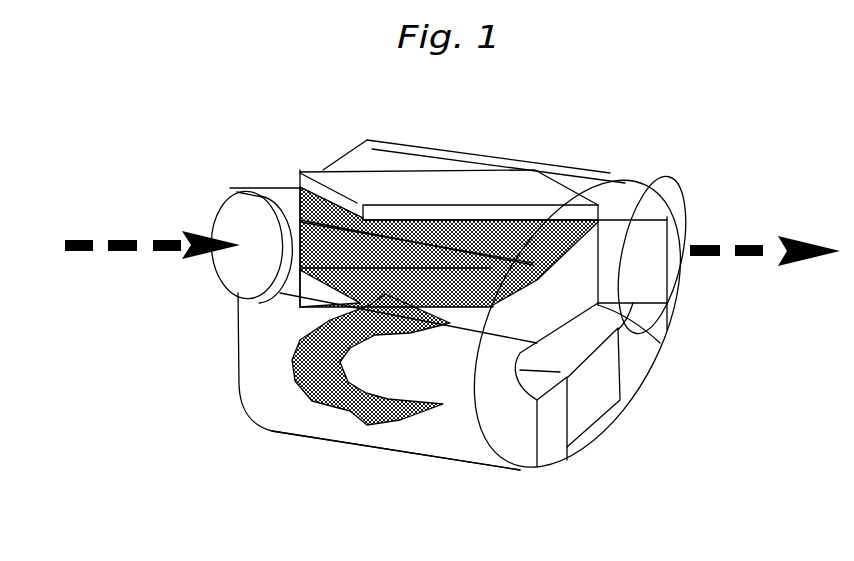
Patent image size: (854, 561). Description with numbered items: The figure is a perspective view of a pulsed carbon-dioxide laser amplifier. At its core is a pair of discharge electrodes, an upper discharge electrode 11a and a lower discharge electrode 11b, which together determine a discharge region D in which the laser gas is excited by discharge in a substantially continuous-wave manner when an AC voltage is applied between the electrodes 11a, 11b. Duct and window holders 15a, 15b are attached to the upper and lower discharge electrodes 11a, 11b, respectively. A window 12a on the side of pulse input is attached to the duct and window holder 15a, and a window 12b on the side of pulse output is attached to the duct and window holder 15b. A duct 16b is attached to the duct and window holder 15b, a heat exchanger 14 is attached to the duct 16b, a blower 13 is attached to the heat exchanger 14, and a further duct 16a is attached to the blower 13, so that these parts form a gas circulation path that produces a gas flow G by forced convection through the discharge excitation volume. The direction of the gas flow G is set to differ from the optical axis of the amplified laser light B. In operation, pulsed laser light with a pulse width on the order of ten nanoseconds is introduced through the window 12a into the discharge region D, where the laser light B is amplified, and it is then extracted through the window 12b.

The amplified laser light B is at (452, 212).
The discharge region D is at (416, 175).
The gas flow G is at (453, 323).
The upper discharge electrode 11a is at (466, 174).
The lower discharge electrode 11b is at (662, 331).
The window on the side of pulse input 12a is at (245, 220).
The window on the side of pulse output 12b is at (652, 247).
The blower 13 is at (556, 417).
The heat exchanger 14 is at (593, 409).
The duct and window holder 15a is at (413, 223).
The duct and window holder 15b is at (462, 148).
The duct 16a is at (396, 489).
The duct 16b is at (618, 207).